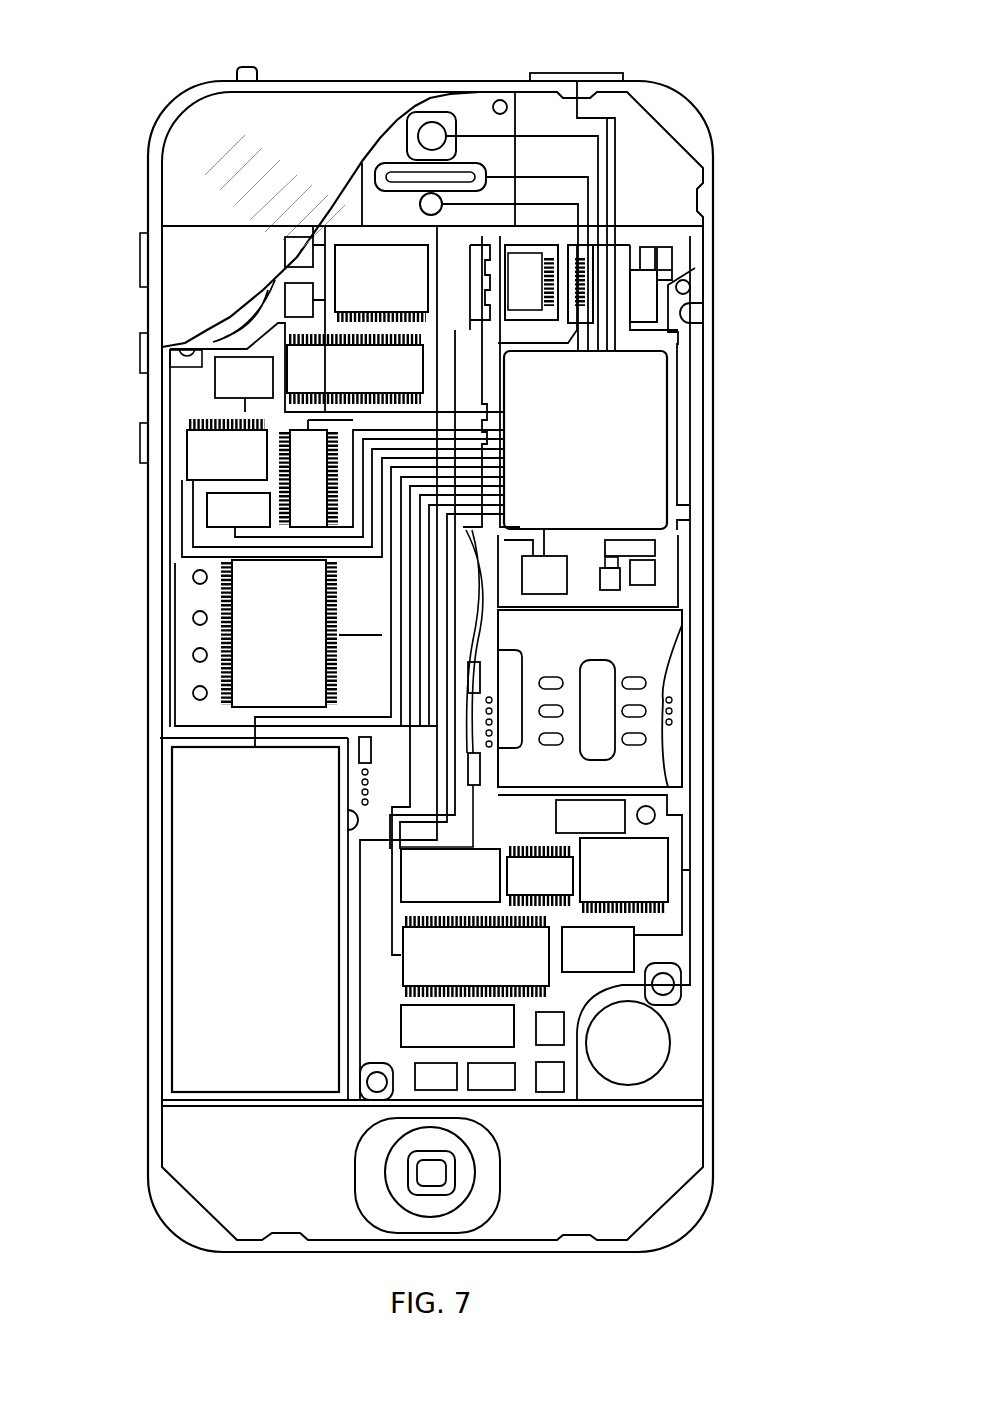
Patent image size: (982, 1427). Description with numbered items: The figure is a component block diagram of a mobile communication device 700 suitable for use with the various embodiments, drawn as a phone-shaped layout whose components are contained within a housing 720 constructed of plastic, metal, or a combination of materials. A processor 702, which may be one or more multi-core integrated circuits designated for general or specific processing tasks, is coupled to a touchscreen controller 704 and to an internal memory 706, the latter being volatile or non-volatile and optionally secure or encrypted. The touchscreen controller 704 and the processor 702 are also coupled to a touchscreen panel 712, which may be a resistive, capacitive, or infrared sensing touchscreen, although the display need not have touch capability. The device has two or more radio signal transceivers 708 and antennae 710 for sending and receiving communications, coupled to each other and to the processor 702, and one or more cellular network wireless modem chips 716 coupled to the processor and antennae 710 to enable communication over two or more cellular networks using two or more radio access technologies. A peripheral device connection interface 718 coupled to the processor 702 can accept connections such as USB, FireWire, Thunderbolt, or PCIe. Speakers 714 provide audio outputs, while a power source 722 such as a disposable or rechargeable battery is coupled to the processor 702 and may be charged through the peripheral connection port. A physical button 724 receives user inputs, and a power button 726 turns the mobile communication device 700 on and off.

The mobile communication device 700 is at (100, 75).
The processor 702 is at (585, 440).
The touchscreen controller 704 is at (381, 281).
The internal memory 706 is at (355, 369).
The radio signal transceivers 708 is at (602, 266).
The antennae 710 is at (662, 300).
The touchscreen panel 712 is at (190, 178).
The speakers 714 is at (380, 165).
The cellular network wireless modem chip 716 is at (476, 956).
The peripheral device connection interface 718 is at (457, 1026).
The housing 720 is at (713, 1150).
The power source 722 is at (255, 919).
The physical button 724 is at (440, 1185).
The power button 726 is at (575, 73).